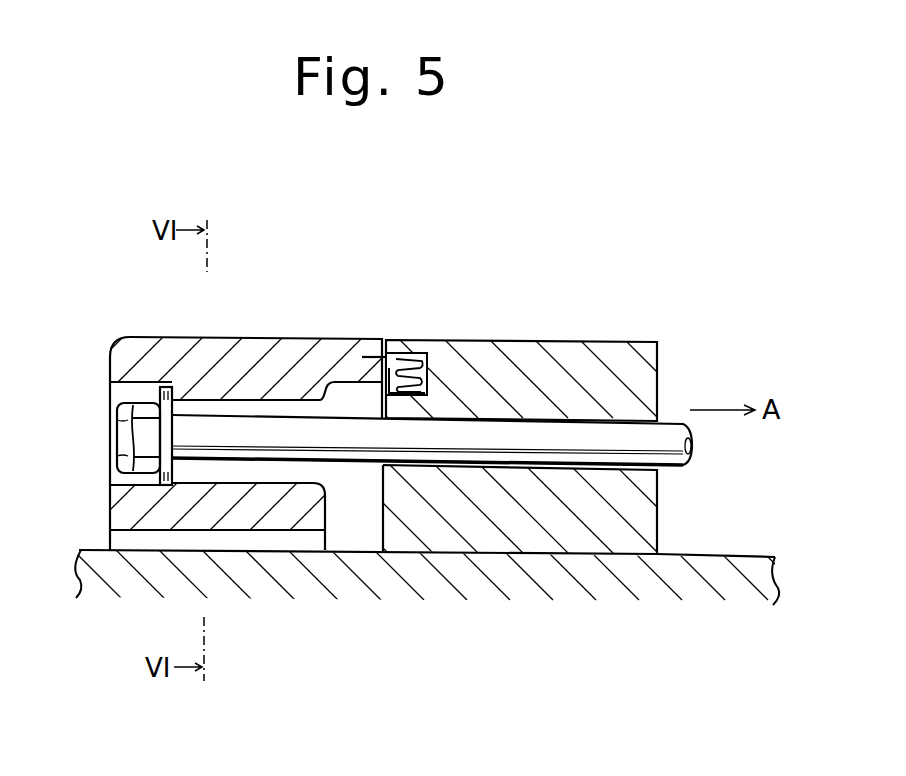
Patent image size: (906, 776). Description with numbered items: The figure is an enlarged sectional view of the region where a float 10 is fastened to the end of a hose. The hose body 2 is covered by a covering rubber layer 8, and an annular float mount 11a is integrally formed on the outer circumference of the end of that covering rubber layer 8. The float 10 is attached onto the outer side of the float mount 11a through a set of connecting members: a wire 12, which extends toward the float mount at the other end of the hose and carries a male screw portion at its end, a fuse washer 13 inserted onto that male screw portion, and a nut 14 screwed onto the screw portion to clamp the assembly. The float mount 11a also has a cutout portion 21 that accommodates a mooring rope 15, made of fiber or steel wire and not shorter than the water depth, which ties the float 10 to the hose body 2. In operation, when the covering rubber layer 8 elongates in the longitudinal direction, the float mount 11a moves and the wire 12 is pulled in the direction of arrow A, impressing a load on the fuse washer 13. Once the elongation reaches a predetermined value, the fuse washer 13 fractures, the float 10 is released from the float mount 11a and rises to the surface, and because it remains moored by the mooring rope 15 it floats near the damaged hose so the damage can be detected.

The hose body 2 is at (768, 557).
The covering rubber layer 8 is at (723, 567).
The float 10 is at (243, 337).
The float mount 11a is at (552, 342).
The wire 12 is at (670, 428).
The fuse washer 13 is at (167, 384).
The nut 14 is at (124, 430).
The mooring rope 15 is at (381, 356).
The cutout portion 21 is at (428, 366).